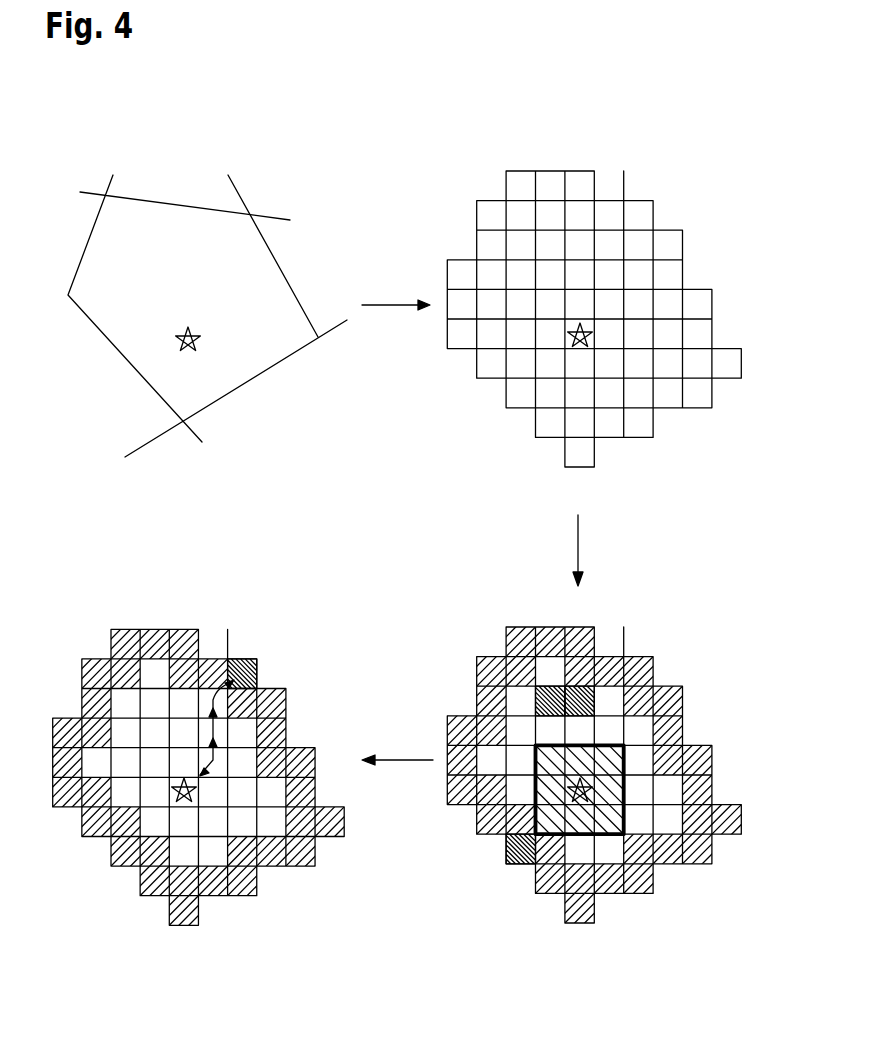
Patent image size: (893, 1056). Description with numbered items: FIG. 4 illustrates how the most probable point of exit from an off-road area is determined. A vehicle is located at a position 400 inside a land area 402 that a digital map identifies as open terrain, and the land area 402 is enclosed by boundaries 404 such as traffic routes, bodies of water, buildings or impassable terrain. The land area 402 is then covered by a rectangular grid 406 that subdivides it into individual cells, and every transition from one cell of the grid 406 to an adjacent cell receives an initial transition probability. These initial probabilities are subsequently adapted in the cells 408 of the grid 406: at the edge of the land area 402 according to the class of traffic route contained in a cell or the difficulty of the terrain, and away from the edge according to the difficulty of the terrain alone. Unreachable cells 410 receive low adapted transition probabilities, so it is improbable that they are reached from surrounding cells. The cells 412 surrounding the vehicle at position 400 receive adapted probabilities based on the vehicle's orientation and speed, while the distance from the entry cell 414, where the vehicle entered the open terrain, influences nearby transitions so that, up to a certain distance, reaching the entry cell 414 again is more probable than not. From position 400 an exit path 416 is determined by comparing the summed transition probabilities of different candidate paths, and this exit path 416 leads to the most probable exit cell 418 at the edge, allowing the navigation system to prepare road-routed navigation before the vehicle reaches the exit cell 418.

The position 400 is at (187, 328).
The land area 402 is at (282, 265).
The boundaries 404 is at (145, 443).
The grid 406 is at (685, 288).
The cells 408 is at (712, 792).
The unreachable cells 410 is at (597, 693).
The cells in the area surrounding the vehicle 412 is at (603, 822).
The entry cell 414 is at (512, 862).
The exit path 416 is at (213, 728).
The exit cell 418 is at (245, 660).